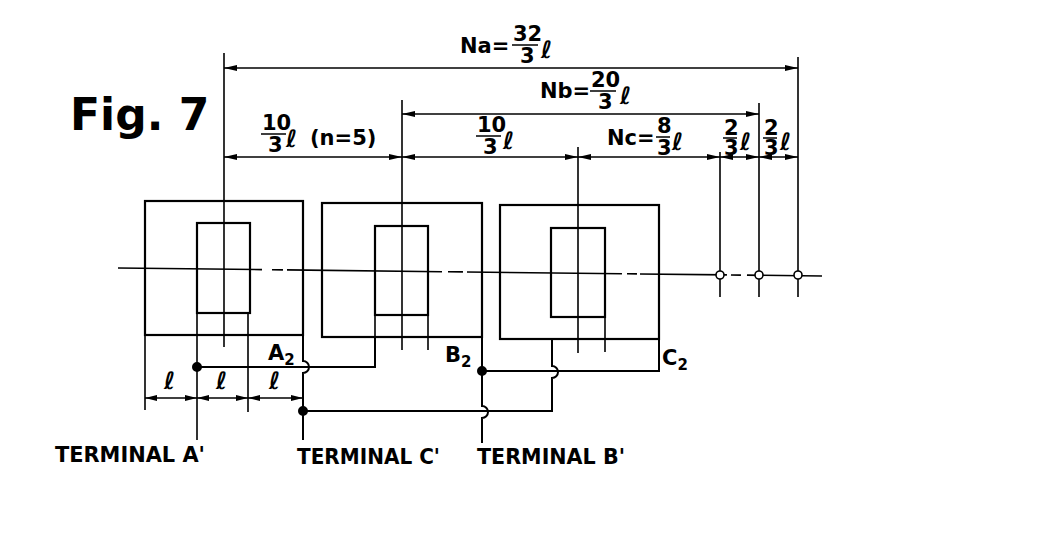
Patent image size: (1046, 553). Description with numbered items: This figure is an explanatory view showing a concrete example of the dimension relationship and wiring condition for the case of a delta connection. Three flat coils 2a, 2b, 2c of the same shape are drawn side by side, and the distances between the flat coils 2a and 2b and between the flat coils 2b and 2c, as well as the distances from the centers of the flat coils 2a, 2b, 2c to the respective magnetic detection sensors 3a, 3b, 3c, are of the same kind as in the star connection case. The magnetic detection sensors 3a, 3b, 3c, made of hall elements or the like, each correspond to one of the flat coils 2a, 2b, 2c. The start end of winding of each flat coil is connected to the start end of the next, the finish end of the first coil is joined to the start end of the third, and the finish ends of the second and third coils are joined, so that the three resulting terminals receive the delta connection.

The flat coil 2a is at (155, 226).
The flat coil 2b is at (347, 207).
The flat coil 2c is at (527, 208).
The magnetic detection sensor 3a is at (802, 278).
The magnetic detection sensor 3b is at (757, 281).
The magnetic detection sensor 3c is at (718, 281).